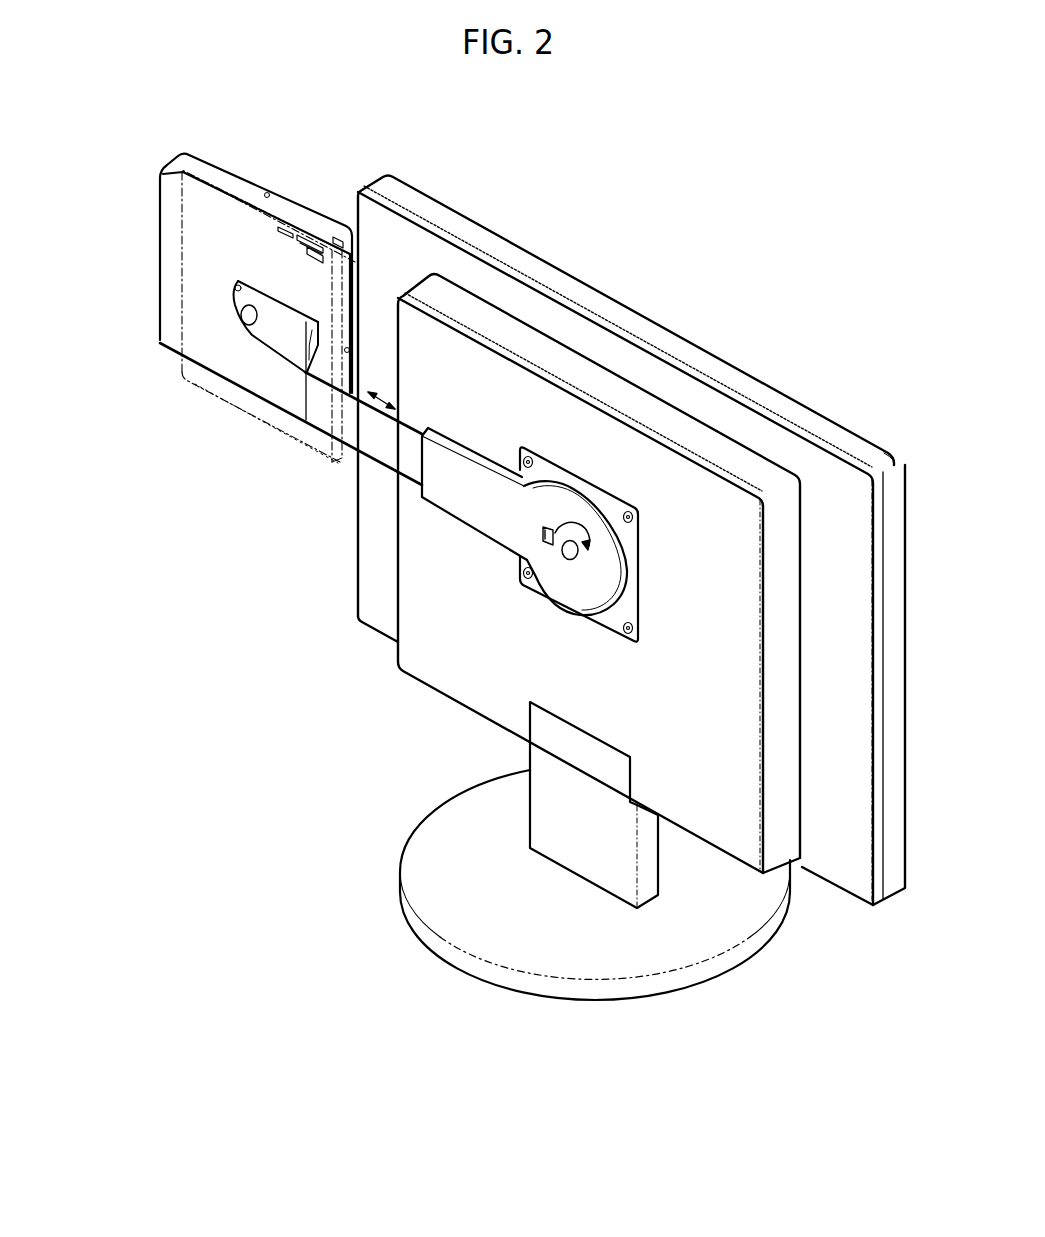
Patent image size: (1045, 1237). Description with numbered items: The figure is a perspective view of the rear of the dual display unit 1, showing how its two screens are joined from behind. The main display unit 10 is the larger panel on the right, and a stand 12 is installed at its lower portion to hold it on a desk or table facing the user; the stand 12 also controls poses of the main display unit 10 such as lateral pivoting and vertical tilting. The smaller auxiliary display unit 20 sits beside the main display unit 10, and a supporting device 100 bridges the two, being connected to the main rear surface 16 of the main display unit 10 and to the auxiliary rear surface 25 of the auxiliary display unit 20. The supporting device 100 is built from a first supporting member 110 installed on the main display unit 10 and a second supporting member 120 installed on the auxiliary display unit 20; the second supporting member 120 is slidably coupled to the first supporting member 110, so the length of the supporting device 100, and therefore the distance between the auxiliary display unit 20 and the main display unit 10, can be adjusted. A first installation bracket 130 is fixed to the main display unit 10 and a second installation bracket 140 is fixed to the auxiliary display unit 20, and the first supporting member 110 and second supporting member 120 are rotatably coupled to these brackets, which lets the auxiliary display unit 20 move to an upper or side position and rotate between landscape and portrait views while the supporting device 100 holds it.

The display apparatus 1 is at (862, 962).
The main display unit 10 is at (645, 296).
The stand 12 is at (427, 838).
The main rear surface 16 is at (710, 793).
The auxiliary display unit 20 is at (148, 230).
The auxiliary rear surface 25 is at (234, 253).
The supporting device 100 is at (383, 449).
The first supporting member 110 is at (490, 520).
The second supporting member 120 is at (337, 408).
The first installation bracket 130 is at (636, 538).
The second installation bracket 140 is at (233, 286).